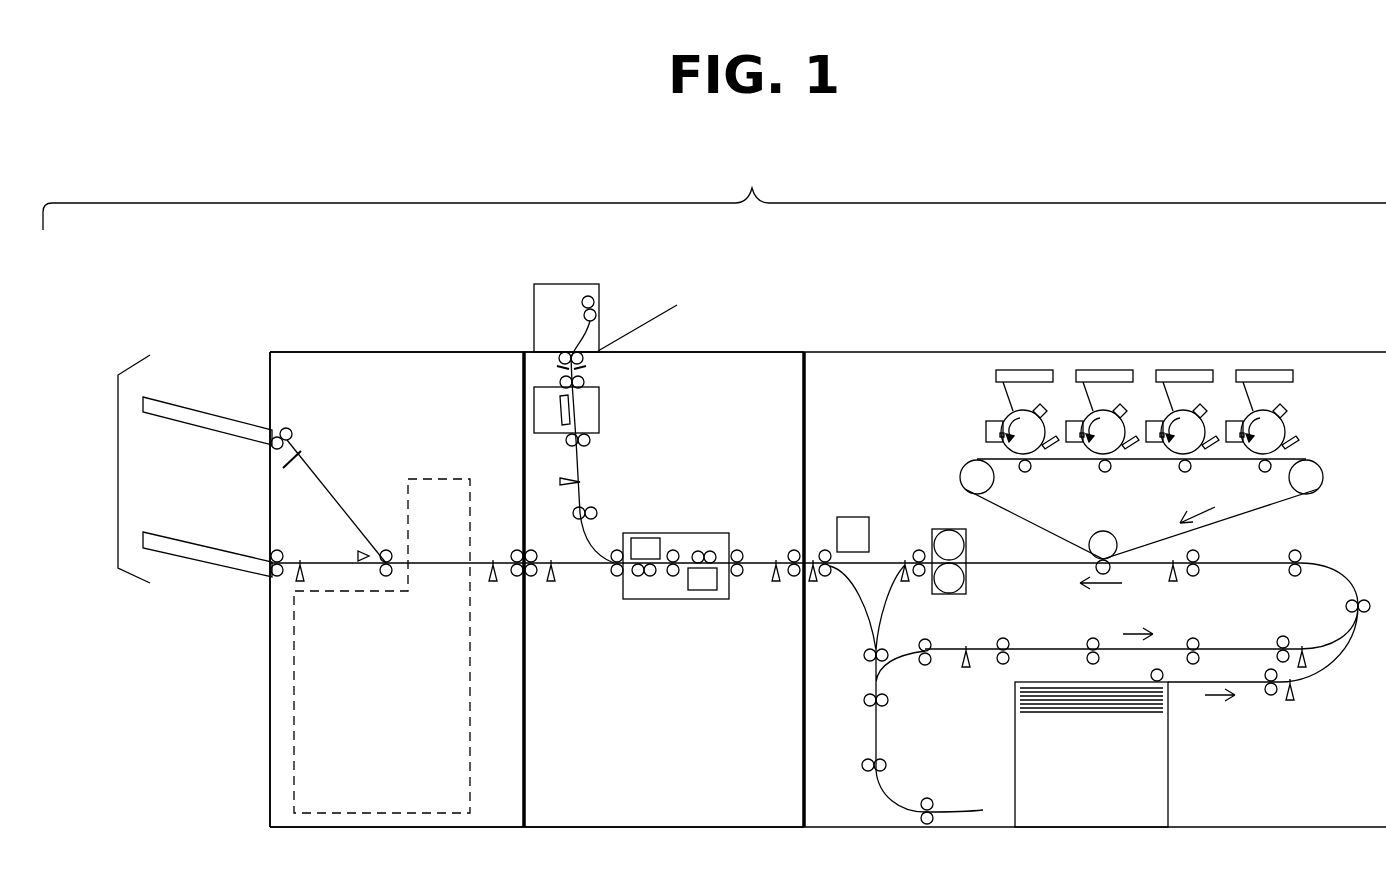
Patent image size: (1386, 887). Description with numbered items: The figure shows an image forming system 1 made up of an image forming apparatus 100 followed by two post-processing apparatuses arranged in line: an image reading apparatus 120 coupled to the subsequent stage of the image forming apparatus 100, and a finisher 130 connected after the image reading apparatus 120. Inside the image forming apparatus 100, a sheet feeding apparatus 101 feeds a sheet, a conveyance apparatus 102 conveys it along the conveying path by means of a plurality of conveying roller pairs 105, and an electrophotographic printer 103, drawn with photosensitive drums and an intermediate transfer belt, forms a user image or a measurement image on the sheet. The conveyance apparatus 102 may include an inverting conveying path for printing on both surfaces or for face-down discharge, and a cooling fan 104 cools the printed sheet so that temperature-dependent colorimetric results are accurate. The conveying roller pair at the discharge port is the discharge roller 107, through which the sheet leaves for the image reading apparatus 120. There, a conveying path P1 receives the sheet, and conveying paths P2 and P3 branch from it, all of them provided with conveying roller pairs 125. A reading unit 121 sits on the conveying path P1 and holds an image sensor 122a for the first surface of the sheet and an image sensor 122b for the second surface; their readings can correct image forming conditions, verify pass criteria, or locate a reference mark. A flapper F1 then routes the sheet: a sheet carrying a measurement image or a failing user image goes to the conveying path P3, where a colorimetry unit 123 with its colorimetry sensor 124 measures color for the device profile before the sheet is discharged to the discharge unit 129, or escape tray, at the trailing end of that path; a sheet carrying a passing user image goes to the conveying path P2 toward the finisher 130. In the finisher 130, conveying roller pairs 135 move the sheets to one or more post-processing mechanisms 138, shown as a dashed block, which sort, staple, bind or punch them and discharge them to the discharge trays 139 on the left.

The image forming system 1 is at (714, 193).
The image forming apparatus 100 is at (1312, 352).
The sheet feeding apparatus 101 is at (1015, 735).
The conveyance apparatus 102 is at (1311, 539).
The printer 103 is at (1320, 430).
The cooling fan 104 is at (852, 517).
The conveying roller pairs 105 is at (1270, 693).
The discharge roller 107 is at (826, 577).
The image reading apparatus 120 is at (727, 352).
The reading unit 121 is at (681, 561).
The image sensor 122a is at (710, 591).
The image sensor 122b is at (648, 538).
The colorimetry unit 123 is at (599, 399).
The colorimetry sensor 124 is at (569, 412).
The conveying roller pairs 125 is at (738, 551).
The discharge unit 129 is at (640, 326).
The finisher 130 is at (368, 352).
The conveying roller pairs 135 is at (388, 551).
The post-processing mechanisms 138 is at (437, 478).
The discharge trays 139 is at (118, 473).
The flapper F1 is at (600, 562).
The conveying path P1 is at (755, 572).
The conveying path P2 is at (572, 569).
The conveying path P3 is at (584, 558).